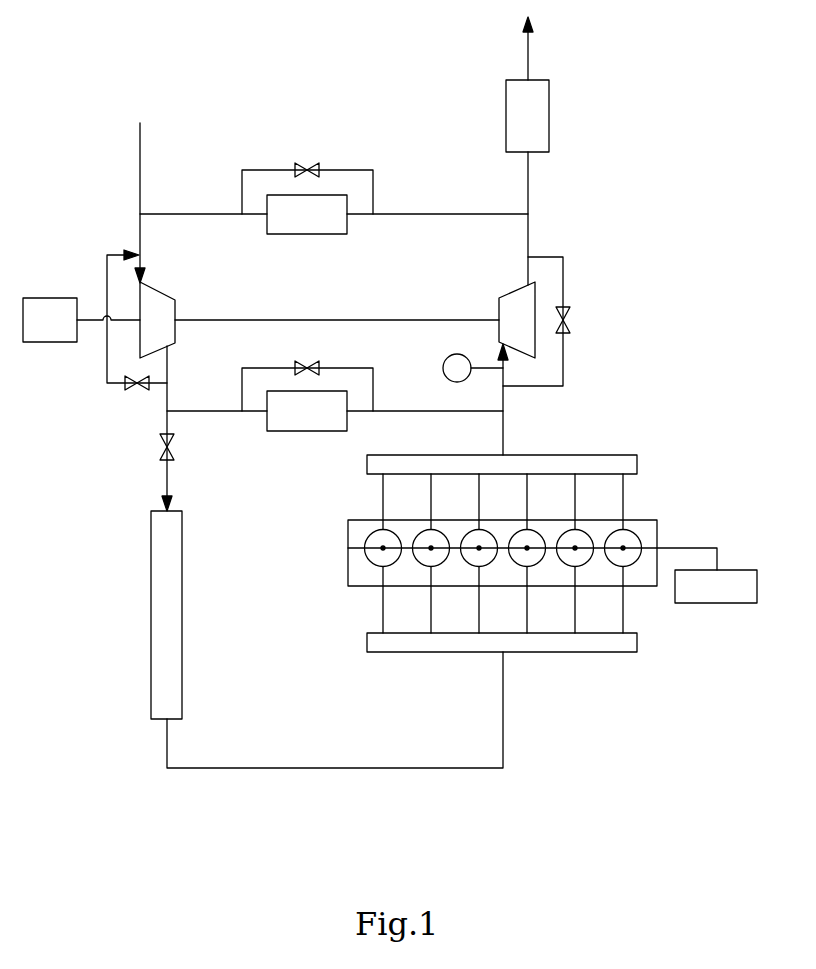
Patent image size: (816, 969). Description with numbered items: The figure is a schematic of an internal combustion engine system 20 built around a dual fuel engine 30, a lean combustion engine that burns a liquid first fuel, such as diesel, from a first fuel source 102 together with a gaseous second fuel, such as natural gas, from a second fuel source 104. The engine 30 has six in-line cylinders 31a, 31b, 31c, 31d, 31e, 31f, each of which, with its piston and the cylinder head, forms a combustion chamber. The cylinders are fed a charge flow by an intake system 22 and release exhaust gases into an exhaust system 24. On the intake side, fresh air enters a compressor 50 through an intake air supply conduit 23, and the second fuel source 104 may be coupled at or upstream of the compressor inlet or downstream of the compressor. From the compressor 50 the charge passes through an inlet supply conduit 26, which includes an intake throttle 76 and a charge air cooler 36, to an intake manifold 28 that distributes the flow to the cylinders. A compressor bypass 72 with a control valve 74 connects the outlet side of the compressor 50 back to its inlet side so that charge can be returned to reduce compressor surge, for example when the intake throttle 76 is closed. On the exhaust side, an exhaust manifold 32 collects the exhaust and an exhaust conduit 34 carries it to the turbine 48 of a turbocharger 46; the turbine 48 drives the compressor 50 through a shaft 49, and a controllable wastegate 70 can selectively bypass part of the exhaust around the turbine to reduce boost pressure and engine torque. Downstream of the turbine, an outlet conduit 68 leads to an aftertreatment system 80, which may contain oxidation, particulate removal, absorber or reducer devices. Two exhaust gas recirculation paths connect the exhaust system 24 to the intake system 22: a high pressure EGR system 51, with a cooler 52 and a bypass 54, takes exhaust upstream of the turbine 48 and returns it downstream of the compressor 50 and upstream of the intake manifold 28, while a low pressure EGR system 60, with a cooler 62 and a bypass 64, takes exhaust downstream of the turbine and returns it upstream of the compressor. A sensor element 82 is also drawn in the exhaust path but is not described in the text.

The internal combustion engine system 20 is at (688, 407).
The intake system 22 is at (128, 710).
The intake air supply conduit 23 is at (140, 182).
The exhaust system 24 is at (578, 224).
The inlet supply conduit 26 is at (503, 700).
The intake manifold 28 is at (618, 652).
The dual fuel engine 30 is at (348, 540).
The cylinder 31a is at (630, 560).
The cylinder 31b is at (572, 542).
The cylinder 31c is at (533, 560).
The cylinder 31d is at (476, 542).
The cylinder 31e is at (437, 560).
The cylinder 31f is at (380, 542).
The exhaust manifold 32 is at (617, 455).
The exhaust conduit 34 is at (504, 420).
The charge air cooler 36 is at (151, 597).
The turbocharger 46 is at (313, 299).
The turbine 48 is at (517, 320).
The shaft 49 is at (237, 320).
The compressor 50 is at (157, 320).
The high pressure EGR system 51 is at (297, 444).
The cooler 52 is at (347, 420).
The bypass 54 is at (358, 368).
The low pressure EGR system 60 is at (306, 149).
The cooler 62 is at (347, 220).
The bypass 64 is at (358, 170).
The outlet conduit 68 is at (528, 182).
The controllable wastegate 70 is at (563, 268).
The compressor bypass 72 is at (107, 368).
The control valve 74 is at (137, 392).
The intake throttle 76 is at (160, 450).
The aftertreatment system 80 is at (549, 90).
The sensor 82 is at (443, 368).
The first fuel source 102 is at (730, 570).
The second fuel source 104 is at (45, 298).